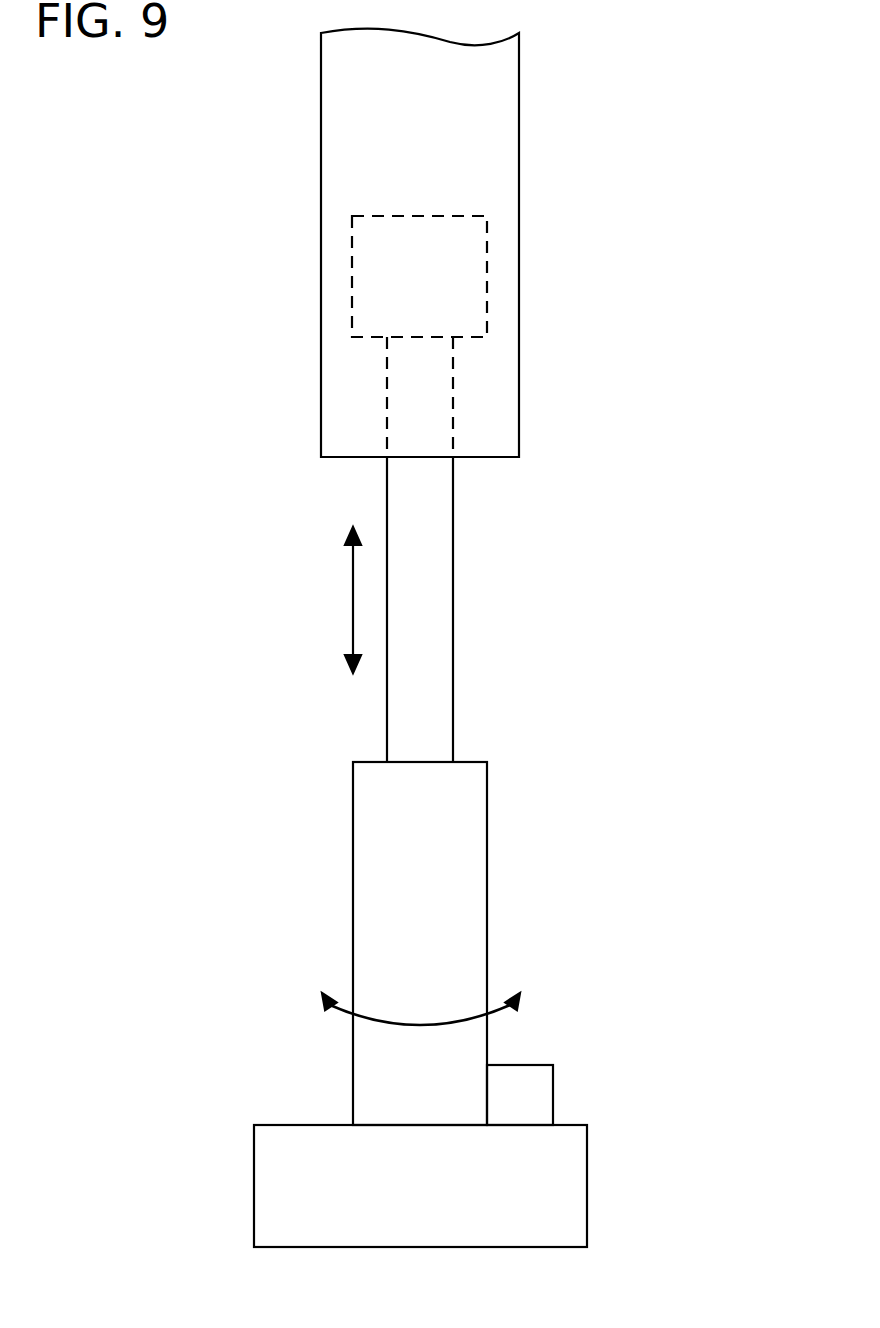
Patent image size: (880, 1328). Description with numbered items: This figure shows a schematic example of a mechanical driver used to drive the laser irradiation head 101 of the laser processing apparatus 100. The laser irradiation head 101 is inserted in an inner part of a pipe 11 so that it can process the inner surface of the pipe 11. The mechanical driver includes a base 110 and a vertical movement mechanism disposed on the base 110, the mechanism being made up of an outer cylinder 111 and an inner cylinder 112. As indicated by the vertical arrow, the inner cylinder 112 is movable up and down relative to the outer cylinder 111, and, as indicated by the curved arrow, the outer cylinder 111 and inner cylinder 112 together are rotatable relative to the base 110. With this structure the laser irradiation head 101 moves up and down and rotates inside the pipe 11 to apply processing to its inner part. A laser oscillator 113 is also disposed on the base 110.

The laser processing apparatus 100 is at (545, 214).
The laser irradiation head 101 is at (473, 297).
The pipe 11 is at (519, 430).
The inner cylinder 112 is at (453, 698).
The outer cylinder 111 is at (487, 827).
The laser oscillator 113 is at (555, 1093).
The base 110 is at (587, 1155).